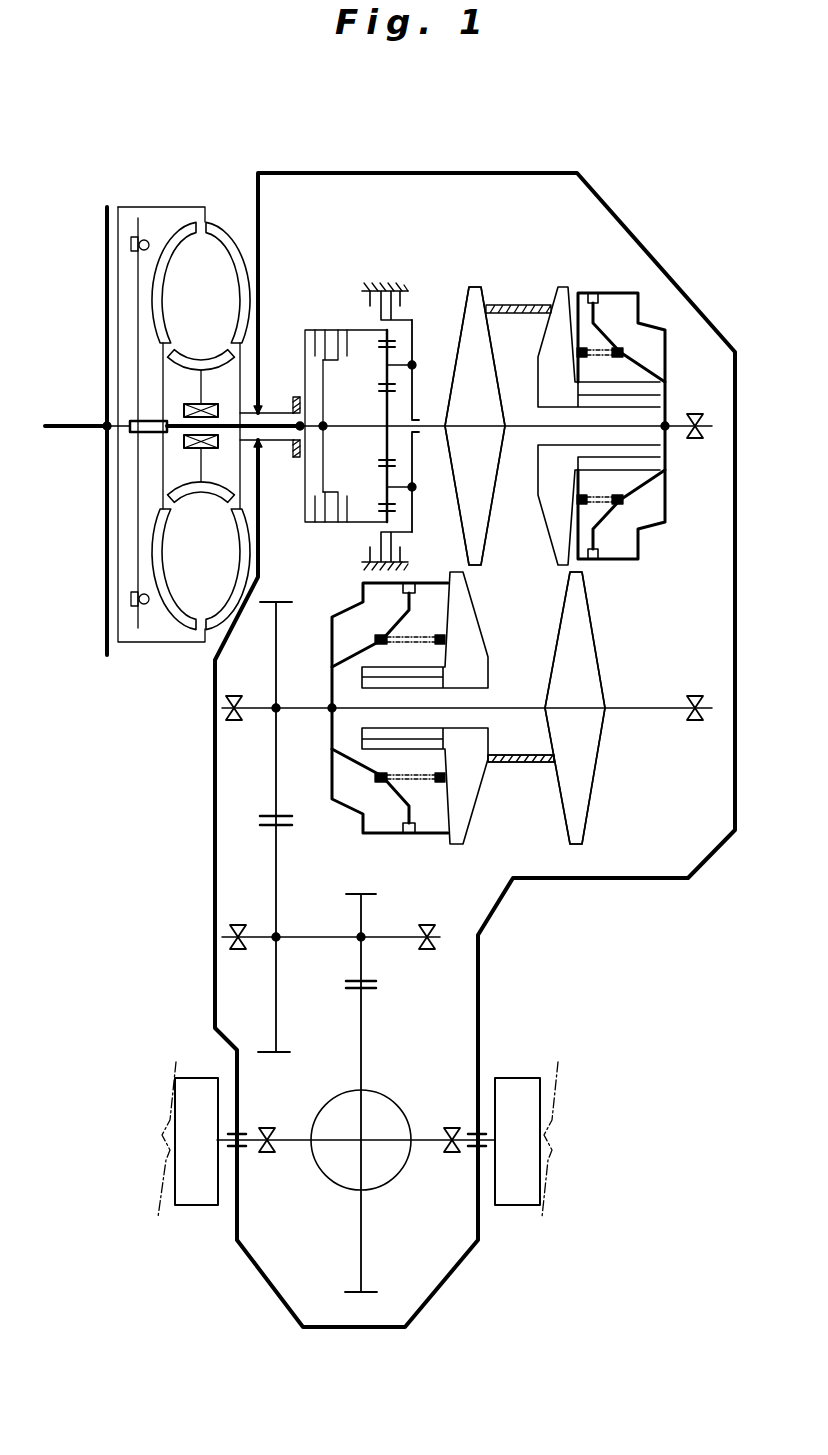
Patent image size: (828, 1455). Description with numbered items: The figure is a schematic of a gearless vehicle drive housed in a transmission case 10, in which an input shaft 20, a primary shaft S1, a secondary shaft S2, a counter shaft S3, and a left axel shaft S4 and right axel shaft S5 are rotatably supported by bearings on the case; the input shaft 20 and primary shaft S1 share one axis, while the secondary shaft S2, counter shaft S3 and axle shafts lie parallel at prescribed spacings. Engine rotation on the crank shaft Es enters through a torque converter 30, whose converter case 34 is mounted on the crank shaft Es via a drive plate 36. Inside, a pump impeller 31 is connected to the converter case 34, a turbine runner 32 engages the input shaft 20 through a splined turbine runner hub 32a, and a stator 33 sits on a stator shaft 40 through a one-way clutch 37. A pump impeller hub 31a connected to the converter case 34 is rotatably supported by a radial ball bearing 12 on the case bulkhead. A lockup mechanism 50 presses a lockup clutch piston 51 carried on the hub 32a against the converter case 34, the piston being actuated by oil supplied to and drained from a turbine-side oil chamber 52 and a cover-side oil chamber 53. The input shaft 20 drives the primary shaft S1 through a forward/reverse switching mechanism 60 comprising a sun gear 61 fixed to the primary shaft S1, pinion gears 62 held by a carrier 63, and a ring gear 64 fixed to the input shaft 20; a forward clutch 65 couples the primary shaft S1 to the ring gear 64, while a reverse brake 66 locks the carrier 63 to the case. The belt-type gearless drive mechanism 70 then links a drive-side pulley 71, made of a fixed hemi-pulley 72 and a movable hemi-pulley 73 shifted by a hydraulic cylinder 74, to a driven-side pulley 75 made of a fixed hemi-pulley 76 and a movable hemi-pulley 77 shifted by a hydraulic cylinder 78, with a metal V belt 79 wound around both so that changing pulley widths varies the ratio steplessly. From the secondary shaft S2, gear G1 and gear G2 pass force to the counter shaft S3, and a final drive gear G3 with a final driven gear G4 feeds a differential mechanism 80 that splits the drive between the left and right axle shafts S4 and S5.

The transmission case 10 is at (404, 173).
The radial ball bearing 12 is at (253, 447).
The input shaft 20 is at (174, 413).
The torque converter 30 is at (222, 215).
The pump impeller 31 is at (251, 258).
The pump impeller hub 31a is at (276, 412).
The turbine runner 32 is at (189, 224).
The turbine runner hub 32a is at (149, 436).
The stator 33 is at (203, 340).
The converter case 34 is at (117, 334).
The drive plate 36 is at (106, 245).
The one-way clutch 37 is at (222, 412).
The stator shaft 40 is at (286, 447).
The lockup mechanism 50 is at (138, 622).
The lockup clutch piston 51 is at (137, 300).
The turbine-side oil chamber 52 is at (162, 220).
The cover-side oil chamber 53 is at (128, 363).
The forward/reverse switching mechanism 60 is at (355, 264).
The sun gear 61 is at (384, 408).
The pinion gears 62 is at (381, 380).
The carrier 63 is at (488, 320).
The ring gear 64 is at (356, 330).
The forward clutch 65 is at (322, 528).
The reverse brake 66 is at (398, 286).
The belt-type gearless drive mechanism 70 is at (613, 583).
The drive-side pulley 71 is at (519, 249).
The fixed hemi-pulley 72 is at (488, 292).
The movable hemi-pulley 73 is at (548, 293).
The hydraulic cylinder 74 is at (590, 343).
The driven-side pulley 75 is at (600, 805).
The fixed hemi-pulley 76 is at (563, 820).
The movable hemi-pulley 77 is at (472, 812).
The hydraulic cylinder 78 is at (420, 800).
The metal V belt 79 is at (536, 604).
The differential mechanism 80 is at (327, 1182).
The crank shaft Es is at (84, 425).
The primary shaft S1 is at (432, 421).
The secondary shaft S2 is at (659, 704).
The counter shaft S3 is at (318, 920).
The left axel shaft S4 is at (293, 1137).
The right axel shaft S5 is at (424, 1137).
The gear G1 is at (275, 760).
The gear G2 is at (275, 866).
The final drive gear G3 is at (365, 899).
The final driven gear G4 is at (365, 1008).